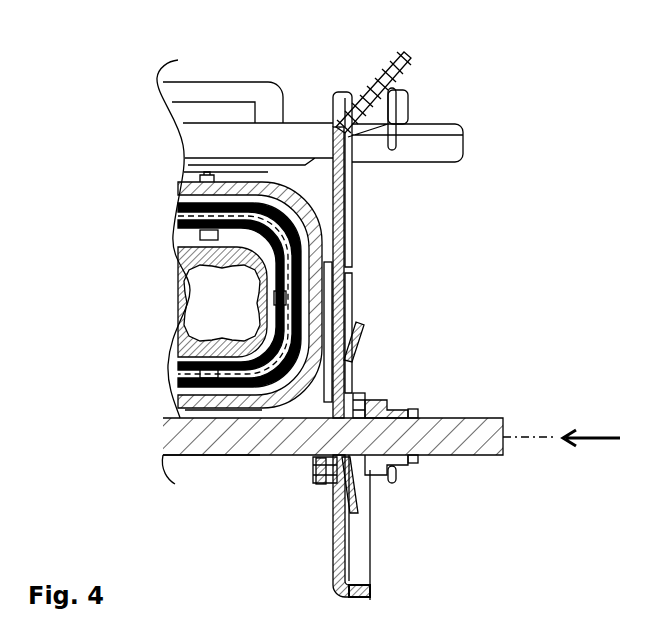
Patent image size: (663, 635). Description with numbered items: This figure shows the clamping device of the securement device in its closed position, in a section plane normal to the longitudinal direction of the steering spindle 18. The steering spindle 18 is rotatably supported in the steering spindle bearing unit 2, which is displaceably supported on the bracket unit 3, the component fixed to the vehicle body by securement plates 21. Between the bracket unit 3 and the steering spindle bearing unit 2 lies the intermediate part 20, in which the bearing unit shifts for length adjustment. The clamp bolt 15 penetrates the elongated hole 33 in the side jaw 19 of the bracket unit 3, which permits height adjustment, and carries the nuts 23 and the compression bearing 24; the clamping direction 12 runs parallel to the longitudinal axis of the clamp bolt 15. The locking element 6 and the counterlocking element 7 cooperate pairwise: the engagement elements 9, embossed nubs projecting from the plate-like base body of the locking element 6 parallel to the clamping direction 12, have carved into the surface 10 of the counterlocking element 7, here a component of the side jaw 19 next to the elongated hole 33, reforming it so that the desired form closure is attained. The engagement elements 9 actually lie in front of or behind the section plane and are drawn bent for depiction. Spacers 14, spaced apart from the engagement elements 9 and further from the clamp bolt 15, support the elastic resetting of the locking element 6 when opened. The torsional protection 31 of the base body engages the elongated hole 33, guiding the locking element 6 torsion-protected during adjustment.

The steering spindle bearing unit 2 is at (348, 262).
The bracket unit 3 is at (283, 135).
The locking element 6 is at (353, 487).
The counterlocking element 7 is at (330, 478).
The engagement elements 9 is at (328, 472).
The surface 10 is at (353, 390).
The clamping direction 12 is at (598, 443).
The spacers 14 is at (345, 327).
The clamp bolt 15 is at (500, 418).
The steering spindle 18 is at (175, 343).
The side jaws 19 is at (332, 573).
The intermediate part 20 is at (352, 203).
The securement plates 21 is at (373, 90).
The nuts 23 is at (413, 413).
The compression bearing 24 is at (373, 400).
The torsional protection 31 is at (250, 442).
The elongated hole 33 is at (338, 307).